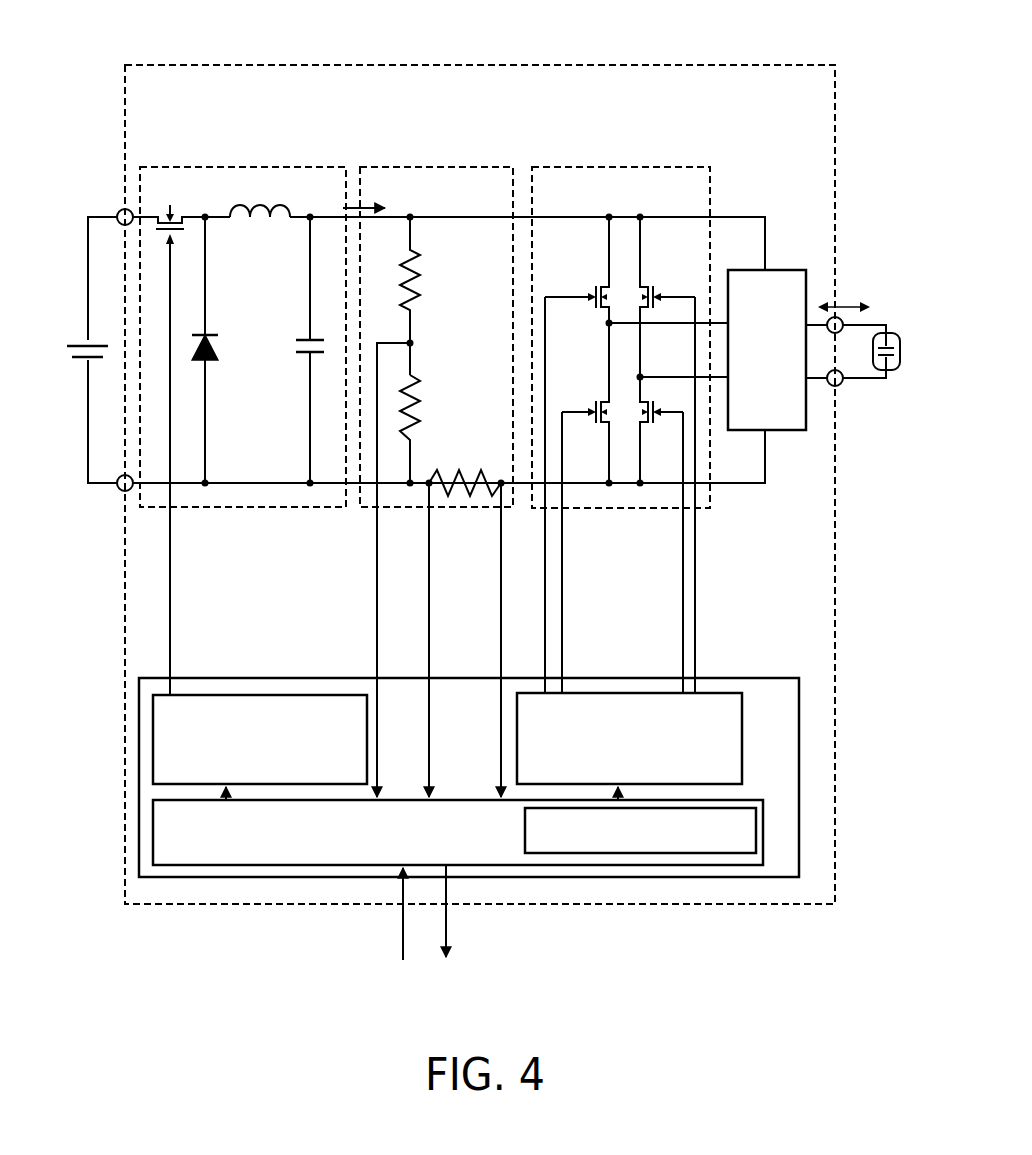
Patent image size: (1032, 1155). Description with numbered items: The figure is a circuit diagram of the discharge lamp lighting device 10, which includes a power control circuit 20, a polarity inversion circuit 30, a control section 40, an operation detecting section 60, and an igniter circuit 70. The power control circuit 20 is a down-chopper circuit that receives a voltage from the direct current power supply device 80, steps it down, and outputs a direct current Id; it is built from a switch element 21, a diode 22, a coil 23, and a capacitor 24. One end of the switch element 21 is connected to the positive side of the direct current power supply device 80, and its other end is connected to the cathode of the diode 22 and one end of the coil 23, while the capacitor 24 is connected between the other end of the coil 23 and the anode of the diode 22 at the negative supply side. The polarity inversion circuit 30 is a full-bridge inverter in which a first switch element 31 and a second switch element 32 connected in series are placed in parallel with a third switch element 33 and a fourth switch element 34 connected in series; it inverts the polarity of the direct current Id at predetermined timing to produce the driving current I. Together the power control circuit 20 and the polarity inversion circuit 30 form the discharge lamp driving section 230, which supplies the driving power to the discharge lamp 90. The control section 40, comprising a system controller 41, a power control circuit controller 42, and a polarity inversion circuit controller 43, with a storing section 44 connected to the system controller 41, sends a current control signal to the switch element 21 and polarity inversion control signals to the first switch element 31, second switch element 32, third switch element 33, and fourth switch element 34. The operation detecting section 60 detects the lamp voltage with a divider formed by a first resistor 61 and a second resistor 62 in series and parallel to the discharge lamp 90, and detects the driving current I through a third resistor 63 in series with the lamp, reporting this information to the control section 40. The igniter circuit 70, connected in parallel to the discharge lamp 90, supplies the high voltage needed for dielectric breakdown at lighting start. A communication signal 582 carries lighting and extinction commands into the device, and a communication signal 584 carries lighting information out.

The discharge lamp lighting device 10 is at (694, 65).
The discharge lamp driving section 230 is at (668, 112).
The power control circuit 20 is at (283, 167).
The switch element 21 is at (170, 438).
The diode 22 is at (217, 350).
The coil 23 is at (260, 199).
The capacitor 24 is at (297, 350).
The polarity inversion circuit 30 is at (630, 167).
The first switch element 31 is at (576, 478).
The second switch element 32 is at (583, 535).
The third switch element 33 is at (668, 478).
The fourth switch element 34 is at (666, 535).
The operation detecting section 60 is at (455, 510).
The first resistor 61 is at (431, 296).
The second resistor 62 is at (431, 429).
The third resistor 63 is at (465, 467).
The igniter circuit 70 is at (790, 270).
The direct current power supply device 80 is at (82, 340).
The discharge lamp 90 is at (890, 333).
The control section 40 is at (577, 678).
The system controller 41 is at (748, 808).
The power control circuit controller 42 is at (295, 695).
The polarity inversion circuit controller 43 is at (735, 693).
The storing section 44 is at (756, 812).
The communication signal 582 is at (403, 932).
The communication signal 584 is at (446, 932).